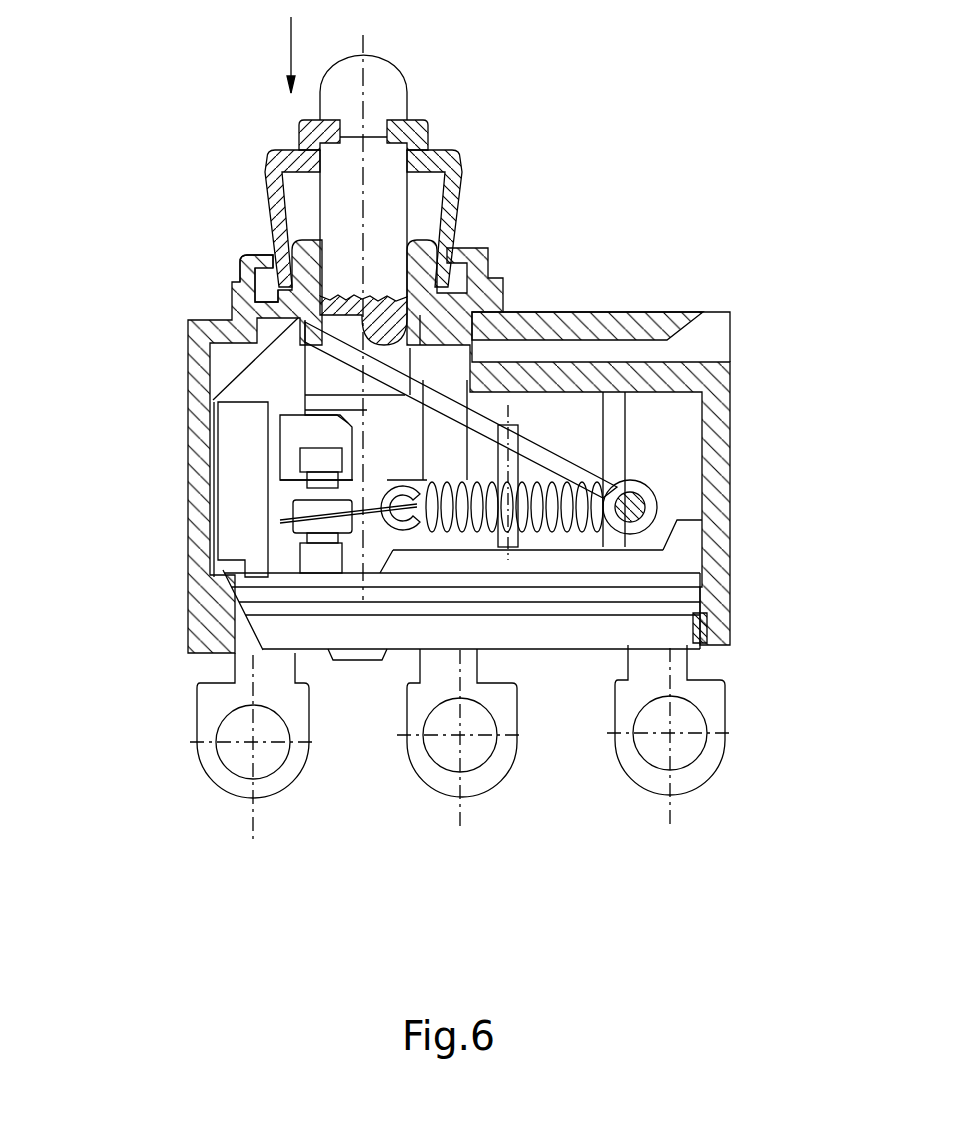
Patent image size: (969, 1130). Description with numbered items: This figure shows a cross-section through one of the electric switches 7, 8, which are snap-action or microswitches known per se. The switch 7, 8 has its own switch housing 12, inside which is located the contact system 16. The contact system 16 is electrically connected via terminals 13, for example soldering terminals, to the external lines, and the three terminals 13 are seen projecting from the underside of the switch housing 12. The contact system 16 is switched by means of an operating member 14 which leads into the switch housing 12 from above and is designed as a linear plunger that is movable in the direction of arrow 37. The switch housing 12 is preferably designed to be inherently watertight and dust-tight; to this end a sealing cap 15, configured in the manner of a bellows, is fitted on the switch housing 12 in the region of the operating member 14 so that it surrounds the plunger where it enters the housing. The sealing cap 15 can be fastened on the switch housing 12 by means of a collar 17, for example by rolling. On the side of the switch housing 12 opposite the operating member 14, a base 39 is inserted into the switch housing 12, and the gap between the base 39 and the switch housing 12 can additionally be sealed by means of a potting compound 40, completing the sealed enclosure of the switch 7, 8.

The electric switch 7 is at (590, 233).
The electric switch 8 is at (627, 297).
The switch housing 12 is at (203, 417).
The terminals 13 is at (230, 783).
The operating member 14 is at (345, 167).
The sealing cap 15 is at (270, 217).
The contact system 16 is at (367, 540).
The collar 17 is at (242, 262).
The arrow 37 is at (291, 28).
The base 39 is at (545, 600).
The potting compound 40 is at (700, 647).